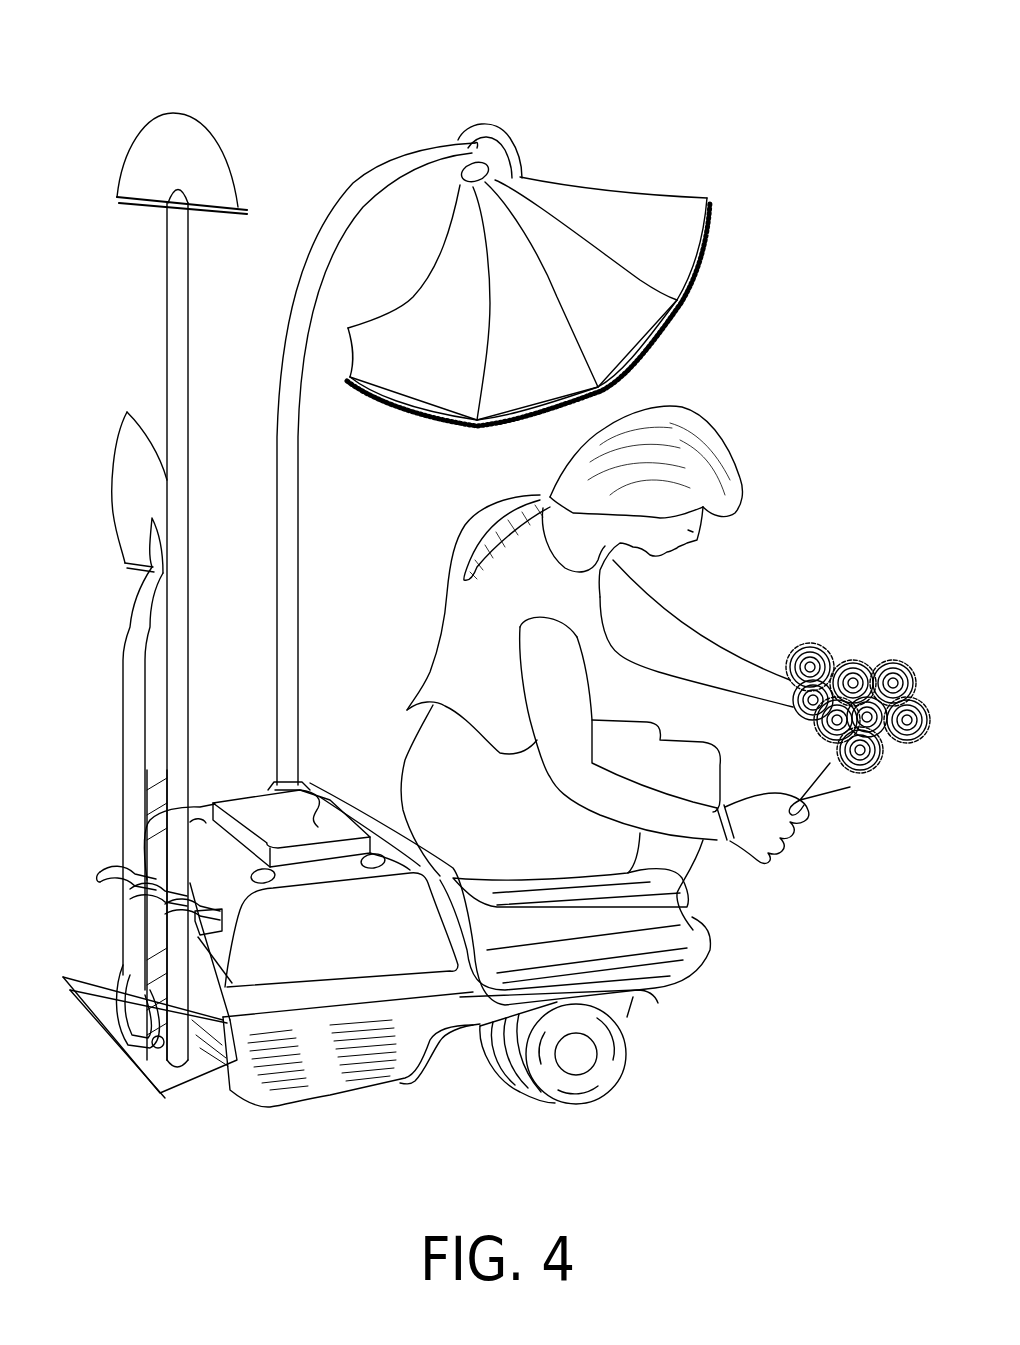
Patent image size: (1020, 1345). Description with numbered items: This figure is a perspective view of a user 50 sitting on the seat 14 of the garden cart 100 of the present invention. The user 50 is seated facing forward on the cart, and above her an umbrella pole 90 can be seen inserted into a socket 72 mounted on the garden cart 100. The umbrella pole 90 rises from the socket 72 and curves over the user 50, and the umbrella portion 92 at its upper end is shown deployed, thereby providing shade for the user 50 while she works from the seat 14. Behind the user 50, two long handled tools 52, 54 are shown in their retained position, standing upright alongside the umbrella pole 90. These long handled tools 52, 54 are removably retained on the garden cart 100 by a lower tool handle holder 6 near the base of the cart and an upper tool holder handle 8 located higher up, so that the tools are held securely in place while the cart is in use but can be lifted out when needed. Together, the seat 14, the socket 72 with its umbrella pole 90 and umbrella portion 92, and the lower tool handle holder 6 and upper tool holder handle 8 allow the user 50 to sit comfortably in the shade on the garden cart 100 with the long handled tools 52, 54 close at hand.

The garden cart 100 is at (793, 93).
The lower tool handle holder 6 is at (148, 1078).
The upper tool holder handle 8 is at (101, 873).
The seat 14 is at (657, 872).
The user 50 is at (740, 452).
The long handled tool 52 is at (187, 116).
The long handled tool 54 is at (127, 412).
The socket 72 is at (276, 789).
The umbrella pole 90 is at (386, 150).
The umbrella portion 92 is at (650, 190).